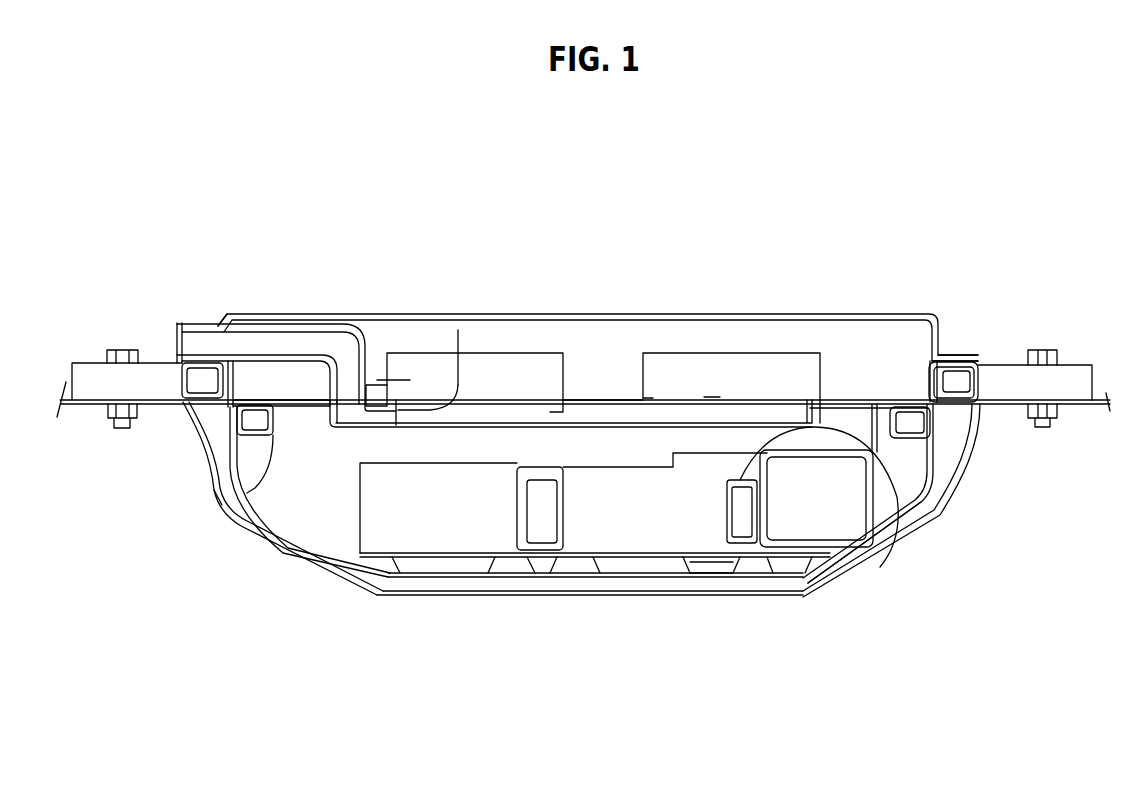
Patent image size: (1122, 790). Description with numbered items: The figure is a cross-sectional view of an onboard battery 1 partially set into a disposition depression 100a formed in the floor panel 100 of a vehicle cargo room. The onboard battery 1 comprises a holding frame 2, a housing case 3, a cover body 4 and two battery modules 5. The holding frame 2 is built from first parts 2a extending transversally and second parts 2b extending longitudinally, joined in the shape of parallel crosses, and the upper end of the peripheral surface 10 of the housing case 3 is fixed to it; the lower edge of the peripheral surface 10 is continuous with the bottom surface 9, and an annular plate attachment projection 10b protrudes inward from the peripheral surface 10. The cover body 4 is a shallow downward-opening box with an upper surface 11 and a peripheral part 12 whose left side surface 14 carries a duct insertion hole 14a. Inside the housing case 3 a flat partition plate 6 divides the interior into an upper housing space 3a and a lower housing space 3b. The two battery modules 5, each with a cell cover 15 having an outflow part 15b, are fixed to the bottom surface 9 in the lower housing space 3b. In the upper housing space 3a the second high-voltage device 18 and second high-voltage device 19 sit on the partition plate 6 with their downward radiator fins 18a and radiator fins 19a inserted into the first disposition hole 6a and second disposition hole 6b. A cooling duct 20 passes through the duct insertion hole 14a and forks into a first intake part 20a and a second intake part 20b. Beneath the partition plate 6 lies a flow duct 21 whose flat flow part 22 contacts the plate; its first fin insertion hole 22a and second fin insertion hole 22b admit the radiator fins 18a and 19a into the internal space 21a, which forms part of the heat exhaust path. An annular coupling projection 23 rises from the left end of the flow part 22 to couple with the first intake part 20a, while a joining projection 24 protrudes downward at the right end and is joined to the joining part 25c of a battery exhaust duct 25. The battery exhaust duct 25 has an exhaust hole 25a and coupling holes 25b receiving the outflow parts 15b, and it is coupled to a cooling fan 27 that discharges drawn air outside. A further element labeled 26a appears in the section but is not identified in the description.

The onboard battery 1 is at (981, 192).
The holding frame 2 is at (1077, 362).
The first part 2a is at (1012, 347).
The second part 2b is at (180, 380).
The housing case 3 is at (257, 509).
The upper housing space 3a is at (589, 358).
The lower housing space 3b is at (250, 488).
The cover body 4 is at (263, 313).
The battery module 5 is at (417, 580).
The partition plate 6 is at (930, 313).
The first disposition hole 6a is at (428, 403).
The second disposition hole 6b is at (673, 397).
The bottom surface 9 is at (380, 595).
The peripheral surface 10 is at (230, 460).
The plate attachment projection 10b is at (236, 486).
The upper surface 11 is at (318, 332).
The peripheral part 12 is at (947, 340).
The left side surface 14 is at (178, 323).
The duct insertion hole 14a is at (172, 343).
The cell cover 15 is at (445, 580).
The outflow part 15b is at (550, 583).
The second high-voltage device 18 is at (530, 378).
The radiator fins 18a is at (580, 403).
The second high-voltage device 19 is at (787, 363).
The radiator fins 19a is at (843, 400).
The cooling duct 20 is at (270, 320).
The first intake part 20a is at (373, 385).
The second intake part 20b is at (407, 395).
The flow duct 21 is at (290, 557).
The internal space 21a is at (613, 393).
The flow part 22 is at (327, 550).
The first fin insertion hole 22a is at (458, 330).
The second fin insertion hole 22b is at (704, 397).
The coupling projection 23 is at (325, 386).
The joining projection 24 is at (876, 446).
The battery exhaust duct 25 is at (487, 560).
The exhaust hole 25a is at (796, 565).
The coupling hole 25b is at (520, 570).
The joining part 25c is at (905, 490).
The spacer 26a is at (389, 385).
The cooling fan 27 is at (910, 510).
The floor panel 100 is at (1083, 410).
The disposition depression 100a is at (943, 513).